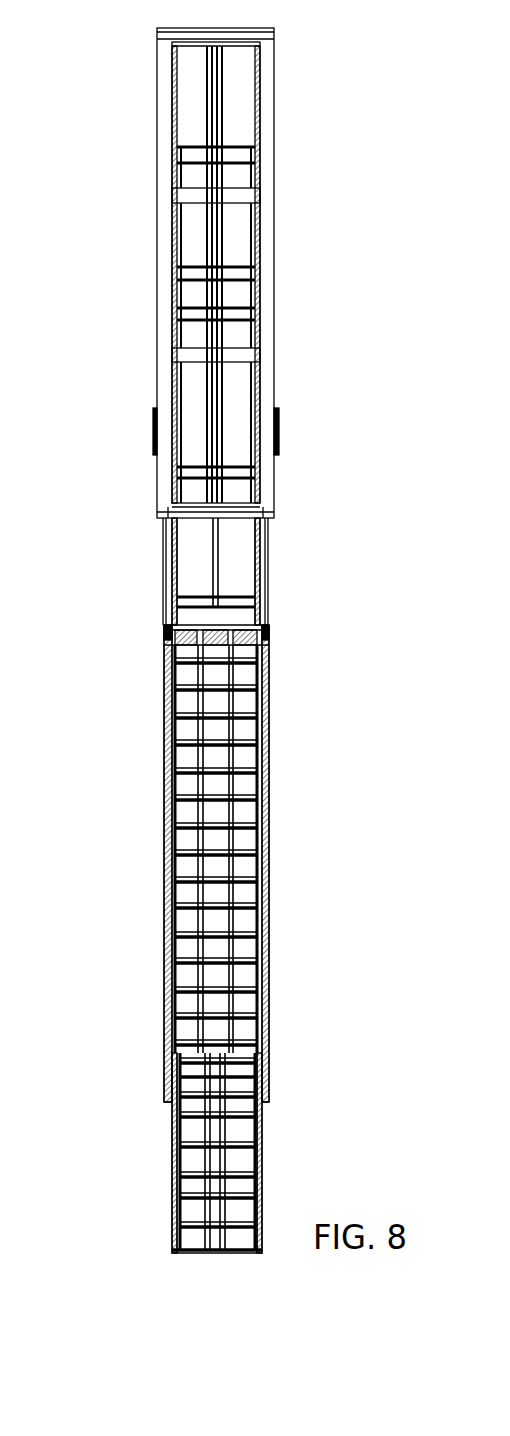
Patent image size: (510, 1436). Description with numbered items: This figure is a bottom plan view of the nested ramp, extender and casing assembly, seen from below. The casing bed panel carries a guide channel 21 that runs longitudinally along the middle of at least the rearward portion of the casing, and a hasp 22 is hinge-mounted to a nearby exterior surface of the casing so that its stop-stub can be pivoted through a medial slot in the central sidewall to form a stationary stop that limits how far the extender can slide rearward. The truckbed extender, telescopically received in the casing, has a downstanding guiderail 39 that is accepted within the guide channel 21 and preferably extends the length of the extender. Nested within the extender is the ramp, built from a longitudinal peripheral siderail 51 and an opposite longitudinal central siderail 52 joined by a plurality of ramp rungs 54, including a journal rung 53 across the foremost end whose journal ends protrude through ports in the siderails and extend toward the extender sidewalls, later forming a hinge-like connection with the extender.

The guide channel 21 is at (207, 90).
The hasp 22 is at (153, 428).
The guiderail 39 is at (213, 553).
The peripheral siderail 51 is at (223, 863).
The central siderail 52 is at (170, 757).
The journal rung 53 is at (267, 645).
The ramp rungs 54 is at (170, 845).